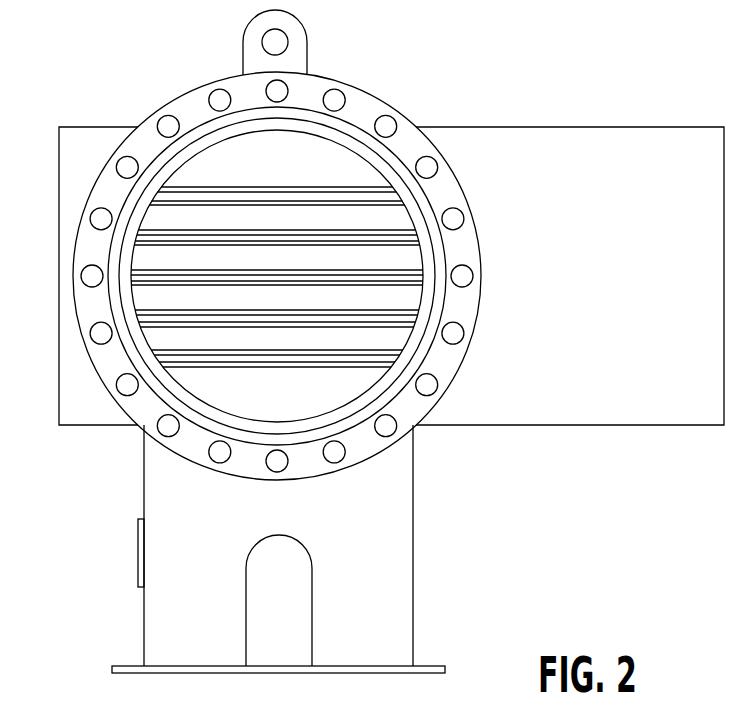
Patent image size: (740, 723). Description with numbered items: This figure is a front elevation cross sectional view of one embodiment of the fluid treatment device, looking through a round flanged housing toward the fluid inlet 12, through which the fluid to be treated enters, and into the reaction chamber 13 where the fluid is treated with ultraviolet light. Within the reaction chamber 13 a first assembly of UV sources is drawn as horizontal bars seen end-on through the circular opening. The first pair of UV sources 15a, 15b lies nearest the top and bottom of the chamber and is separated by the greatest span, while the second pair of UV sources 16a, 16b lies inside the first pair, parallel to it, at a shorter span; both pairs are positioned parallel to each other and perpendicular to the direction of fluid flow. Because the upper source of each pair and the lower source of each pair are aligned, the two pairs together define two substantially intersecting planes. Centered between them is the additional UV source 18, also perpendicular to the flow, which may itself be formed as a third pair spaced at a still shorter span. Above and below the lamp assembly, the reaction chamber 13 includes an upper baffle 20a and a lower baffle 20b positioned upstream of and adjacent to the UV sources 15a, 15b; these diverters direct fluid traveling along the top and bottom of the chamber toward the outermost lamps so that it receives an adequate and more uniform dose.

The fluid inlet 12 is at (160, 372).
The reaction chamber 13 is at (482, 405).
The UV source of first pair 15a is at (397, 200).
The UV source of first pair 15b is at (410, 348).
The UV source of second pair 16a is at (397, 237).
The UV source of second pair 16b is at (400, 317).
The additional UV source 18 is at (413, 275).
The upper baffle 20a is at (300, 147).
The lower baffle 20b is at (320, 402).